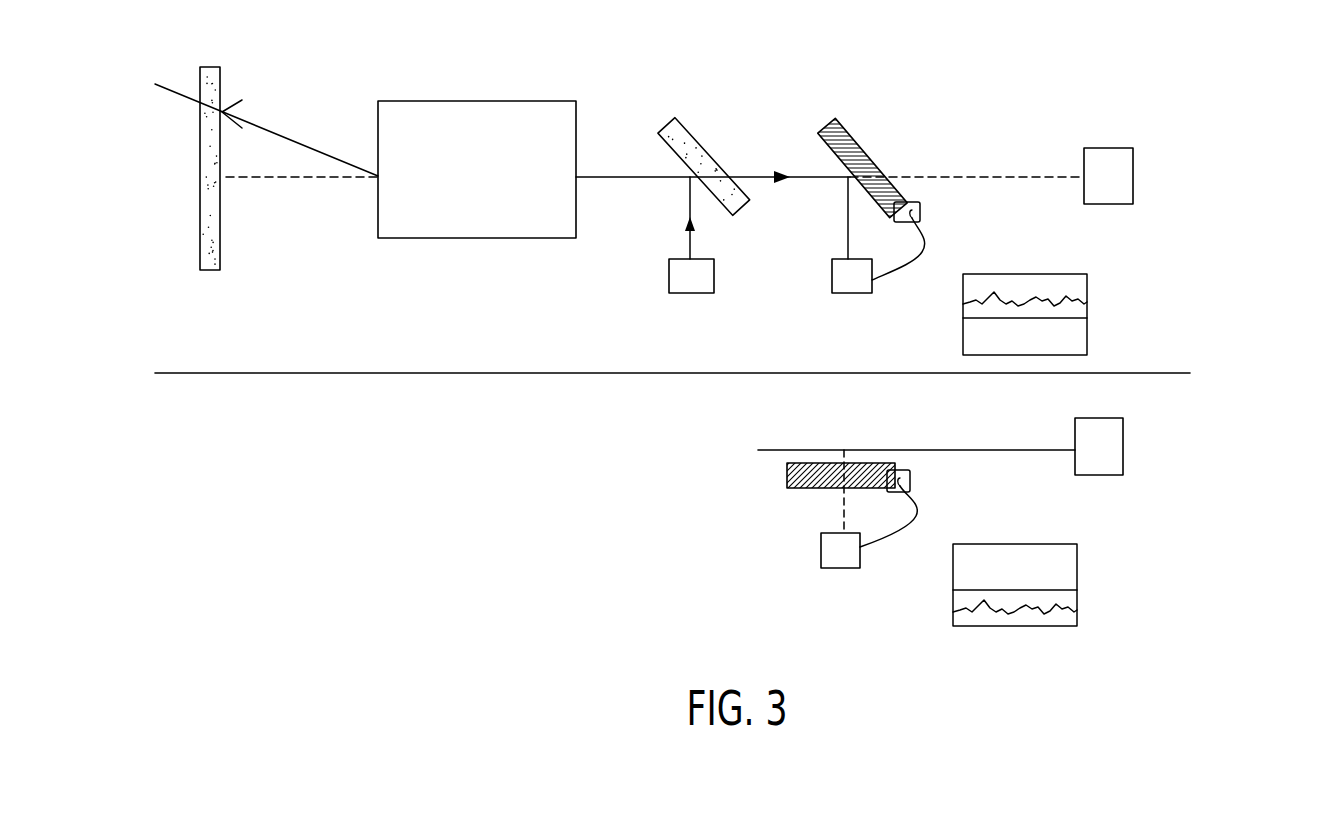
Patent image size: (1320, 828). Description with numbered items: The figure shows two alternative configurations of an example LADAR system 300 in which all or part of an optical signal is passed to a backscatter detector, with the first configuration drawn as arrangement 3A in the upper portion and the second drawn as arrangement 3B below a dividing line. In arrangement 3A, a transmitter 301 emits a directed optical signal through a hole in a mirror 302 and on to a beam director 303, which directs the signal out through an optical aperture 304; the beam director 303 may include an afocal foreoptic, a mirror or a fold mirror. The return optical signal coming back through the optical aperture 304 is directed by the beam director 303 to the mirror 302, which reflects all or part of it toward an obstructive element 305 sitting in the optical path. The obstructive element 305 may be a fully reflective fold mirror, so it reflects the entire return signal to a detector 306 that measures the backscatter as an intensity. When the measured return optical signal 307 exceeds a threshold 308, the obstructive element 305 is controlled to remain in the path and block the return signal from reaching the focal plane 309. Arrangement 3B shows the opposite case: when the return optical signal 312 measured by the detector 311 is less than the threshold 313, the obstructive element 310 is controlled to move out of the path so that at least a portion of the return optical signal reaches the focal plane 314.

The LADAR system 300 is at (168, 629).
The first configuration 3A is at (1234, 124).
The second configuration 3B is at (1234, 469).
The transmitter 301 is at (680, 293).
The mirror 302 is at (688, 127).
The beam director 303 is at (480, 101).
The optical aperture 304 is at (200, 185).
The obstructive element 305 is at (845, 130).
The detector 306 is at (838, 293).
The return optical signal 307 is at (1104, 298).
The threshold 308 is at (1104, 325).
The focal plane 309 is at (1078, 160).
The obstructive element 310 is at (787, 475).
The detector 311 is at (821, 552).
The return optical signal 312 is at (1095, 616).
The threshold 313 is at (1095, 590).
The focal plane 314 is at (1062, 438).